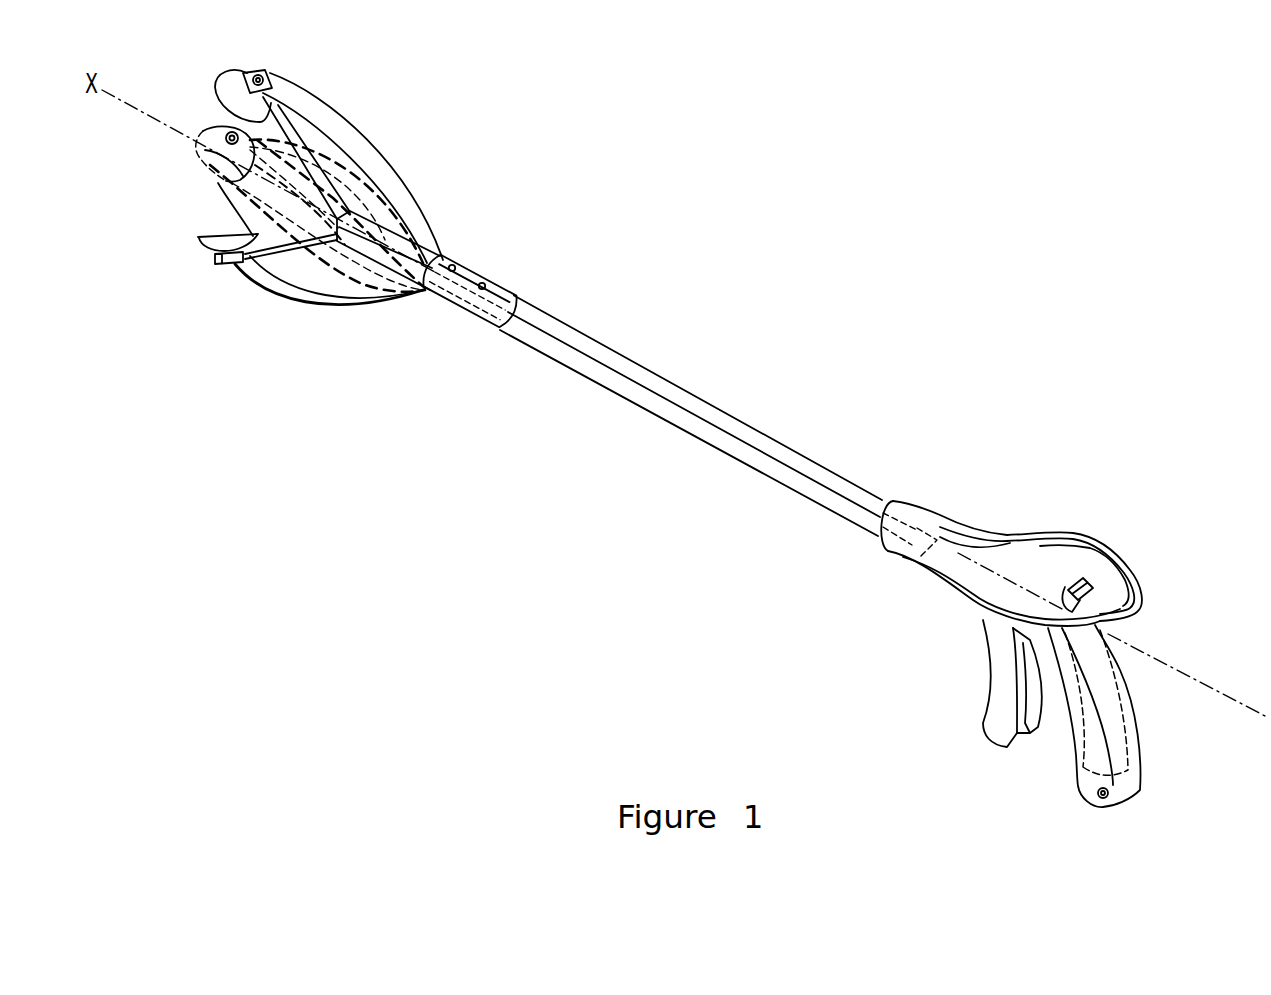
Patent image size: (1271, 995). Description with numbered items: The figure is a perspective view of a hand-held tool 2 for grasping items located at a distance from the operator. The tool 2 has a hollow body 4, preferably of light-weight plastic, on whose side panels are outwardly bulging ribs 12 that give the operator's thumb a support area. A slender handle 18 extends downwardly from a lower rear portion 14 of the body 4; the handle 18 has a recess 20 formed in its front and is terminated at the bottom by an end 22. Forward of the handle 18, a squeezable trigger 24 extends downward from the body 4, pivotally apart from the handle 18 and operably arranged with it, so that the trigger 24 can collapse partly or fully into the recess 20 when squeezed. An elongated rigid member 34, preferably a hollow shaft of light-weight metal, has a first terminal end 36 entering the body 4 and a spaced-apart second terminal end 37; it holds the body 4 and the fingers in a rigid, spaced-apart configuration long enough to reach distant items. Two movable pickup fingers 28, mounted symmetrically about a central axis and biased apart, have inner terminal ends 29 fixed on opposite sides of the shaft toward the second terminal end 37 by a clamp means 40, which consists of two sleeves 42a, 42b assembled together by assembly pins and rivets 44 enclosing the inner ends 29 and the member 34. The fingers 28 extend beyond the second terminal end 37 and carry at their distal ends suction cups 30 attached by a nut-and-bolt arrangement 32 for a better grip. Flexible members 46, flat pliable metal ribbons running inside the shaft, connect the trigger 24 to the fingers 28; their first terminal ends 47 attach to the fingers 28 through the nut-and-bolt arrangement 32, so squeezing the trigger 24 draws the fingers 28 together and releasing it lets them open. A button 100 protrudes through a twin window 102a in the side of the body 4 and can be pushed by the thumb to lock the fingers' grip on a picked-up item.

The hand-held tool 2 is at (617, 170).
The hollow body 4 is at (1050, 557).
The bulging ribs 12 is at (968, 608).
The lower rear portion 14 is at (1105, 626).
The handle 18 is at (1136, 712).
The recess 20 is at (1077, 777).
The end 22 is at (1128, 800).
The squeezable trigger 24 is at (990, 710).
The movable pickup fingers 28 is at (402, 184).
The inner terminal ends 29 is at (474, 262).
The suction cups 30 is at (213, 97).
The nut-and-bolt arrangement 32 is at (270, 76).
The elongated rigid member 34 is at (735, 428).
The first terminal end 36 is at (903, 560).
The second terminal end 37 is at (355, 213).
The clamp means 40 is at (412, 317).
The sleeve 42a is at (478, 313).
The sleeve 42b is at (514, 292).
The assembly pins and rivets 44 is at (482, 282).
The flexible members 46 is at (287, 288).
The first terminal end 47 is at (220, 257).
The buttons 100 is at (1069, 582).
The twin window 102a is at (1090, 580).